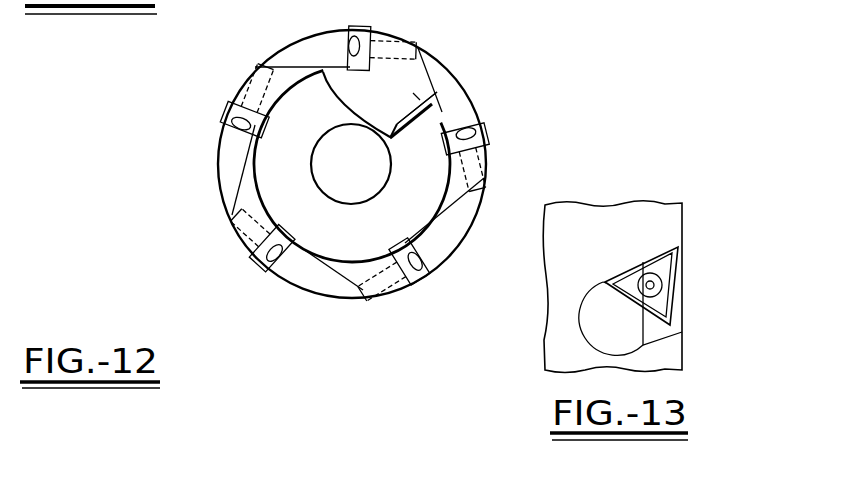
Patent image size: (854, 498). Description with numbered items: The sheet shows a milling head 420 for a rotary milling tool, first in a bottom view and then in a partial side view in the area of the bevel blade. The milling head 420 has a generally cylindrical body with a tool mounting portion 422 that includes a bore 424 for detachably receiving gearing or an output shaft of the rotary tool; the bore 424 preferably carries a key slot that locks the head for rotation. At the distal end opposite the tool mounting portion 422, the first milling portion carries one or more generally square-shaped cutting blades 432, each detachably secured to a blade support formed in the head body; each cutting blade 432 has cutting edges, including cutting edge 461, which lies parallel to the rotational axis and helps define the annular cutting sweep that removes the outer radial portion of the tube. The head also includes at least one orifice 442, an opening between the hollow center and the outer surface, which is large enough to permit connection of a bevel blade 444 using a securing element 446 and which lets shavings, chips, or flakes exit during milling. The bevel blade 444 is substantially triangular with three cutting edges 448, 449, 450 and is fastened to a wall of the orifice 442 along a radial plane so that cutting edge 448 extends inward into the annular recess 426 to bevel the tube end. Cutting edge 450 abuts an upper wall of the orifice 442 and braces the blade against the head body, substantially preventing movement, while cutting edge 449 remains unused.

In FIG. 12, the milling head 420 is at (205, 115).
In FIG. 13, the tool mounting portion 422 is at (683, 220).
In FIG. 12, the bore 424 is at (313, 178).
In FIG. 12, the annular recess 426 is at (260, 167).
In FIG. 12, the cutting blade 432 is at (362, 36).
In FIG. 13, the orifice 442 is at (602, 336).
In FIG. 12, the bevel blade 444 is at (417, 118).
In FIG. 13, the bevel blade 444 is at (688, 265).
In FIG. 12, the securing element 446 is at (413, 93).
In FIG. 13, the securing element 446 is at (661, 286).
In FIG. 12, the cutting edge 448 is at (433, 122).
In FIG. 13, the cutting edge 448 is at (583, 313).
In FIG. 13, the cutting edge 449 is at (674, 308).
In FIG. 13, the cutting edge 450 is at (644, 262).
In FIG. 12, the cutting edge 461 is at (410, 247).